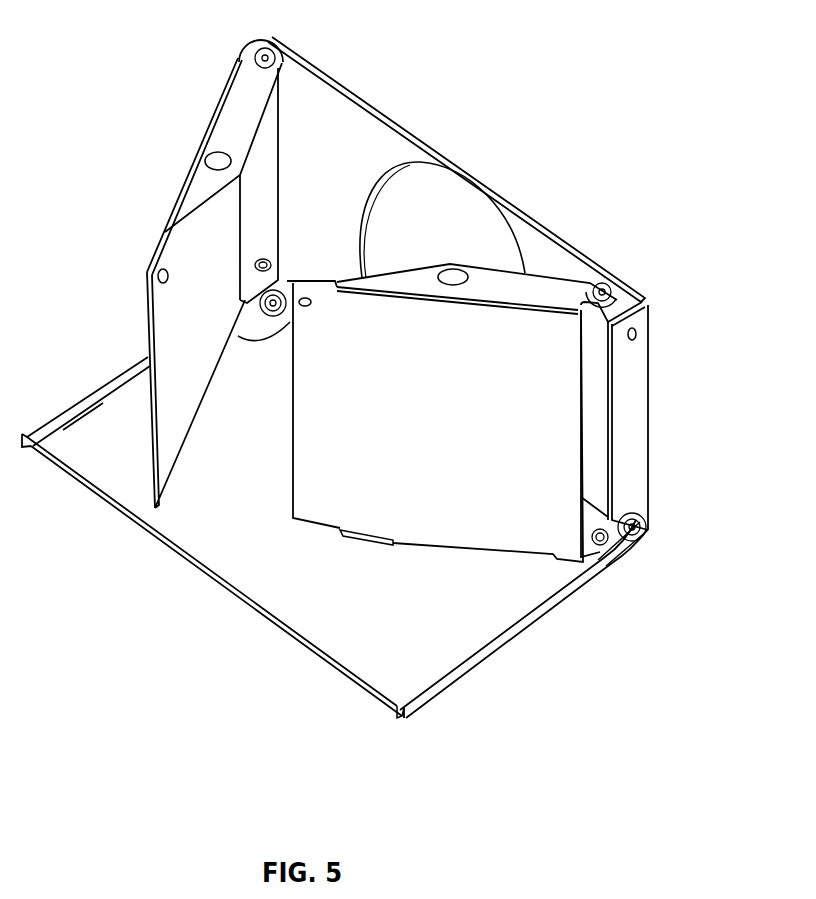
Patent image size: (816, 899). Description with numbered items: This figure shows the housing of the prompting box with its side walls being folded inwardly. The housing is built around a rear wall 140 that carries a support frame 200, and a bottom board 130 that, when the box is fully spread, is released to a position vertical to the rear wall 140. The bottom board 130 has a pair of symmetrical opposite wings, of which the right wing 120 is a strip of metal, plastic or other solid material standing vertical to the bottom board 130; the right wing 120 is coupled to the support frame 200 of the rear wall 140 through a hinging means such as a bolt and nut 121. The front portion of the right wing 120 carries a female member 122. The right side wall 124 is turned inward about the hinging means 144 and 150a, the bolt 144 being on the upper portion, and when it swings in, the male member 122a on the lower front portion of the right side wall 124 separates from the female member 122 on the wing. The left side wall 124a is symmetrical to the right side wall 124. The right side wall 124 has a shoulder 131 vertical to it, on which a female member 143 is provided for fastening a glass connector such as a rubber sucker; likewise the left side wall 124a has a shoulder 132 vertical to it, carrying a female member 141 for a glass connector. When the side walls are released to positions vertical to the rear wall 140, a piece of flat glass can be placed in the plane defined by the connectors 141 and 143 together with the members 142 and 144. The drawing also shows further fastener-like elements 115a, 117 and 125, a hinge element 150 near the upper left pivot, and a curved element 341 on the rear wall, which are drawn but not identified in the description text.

The screw 115a is at (306, 306).
The screw 117 is at (165, 278).
The right wing 120 is at (540, 617).
The bolt and nut 121 is at (625, 536).
The female member 122 is at (457, 680).
The male member 122a is at (366, 543).
The right side wall 124 is at (553, 397).
The left side wall 124a is at (167, 318).
The screw 125 is at (638, 333).
The bottom board 130 is at (253, 568).
The shoulder 131 is at (536, 290).
The shoulder 132 is at (243, 108).
The rear wall 140 is at (323, 103).
The female member 141 is at (220, 162).
The member 142 is at (263, 53).
The female member 143 is at (453, 285).
The bolt 144 is at (603, 290).
The hinge 150 is at (272, 310).
The hinging means 150a is at (613, 530).
The support frame 200 is at (627, 453).
The curved flap 341 is at (440, 203).